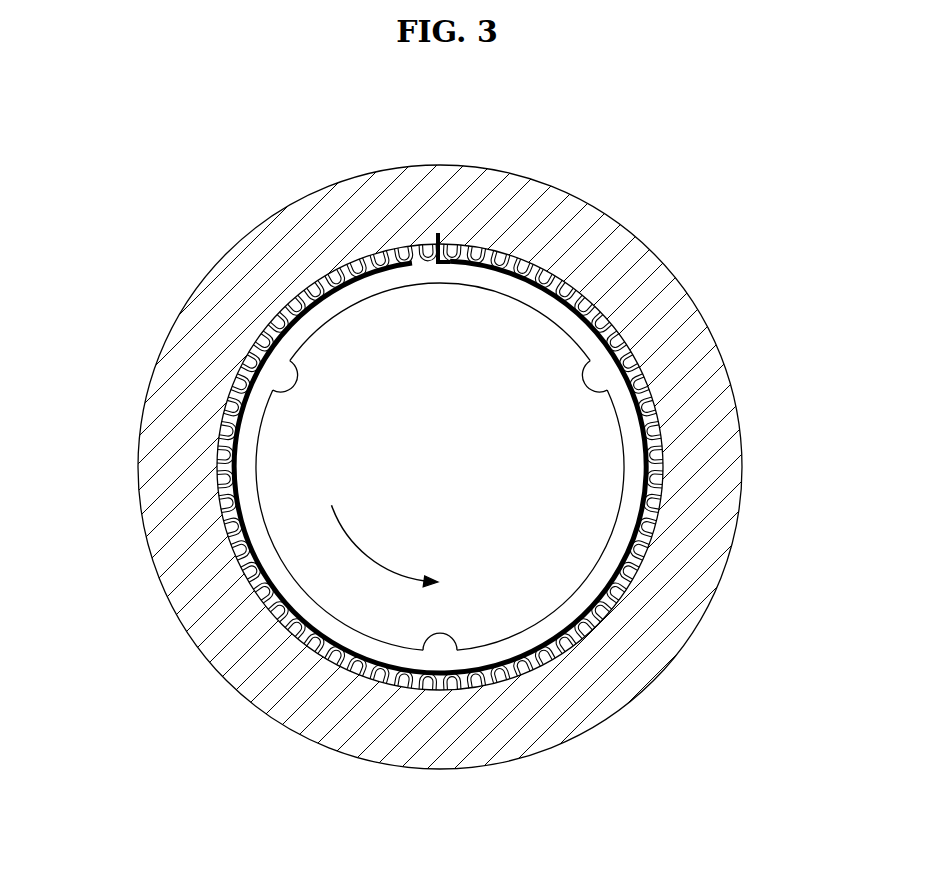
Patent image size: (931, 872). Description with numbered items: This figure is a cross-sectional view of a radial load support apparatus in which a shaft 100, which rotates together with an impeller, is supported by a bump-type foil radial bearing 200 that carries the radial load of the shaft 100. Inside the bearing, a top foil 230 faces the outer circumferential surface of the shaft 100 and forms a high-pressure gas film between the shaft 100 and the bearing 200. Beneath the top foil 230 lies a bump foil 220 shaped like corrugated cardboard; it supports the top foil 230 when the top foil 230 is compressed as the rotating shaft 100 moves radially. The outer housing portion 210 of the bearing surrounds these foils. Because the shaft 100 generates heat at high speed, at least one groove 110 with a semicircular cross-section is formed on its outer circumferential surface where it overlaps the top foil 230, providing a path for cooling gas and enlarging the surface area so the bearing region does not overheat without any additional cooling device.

The shaft 100 is at (460, 337).
The groove 110 is at (292, 380).
The foil radial bearing 200 is at (703, 298).
The housing body 210 is at (640, 260).
The bump foil 220 is at (651, 382).
The top foil 230 is at (542, 630).